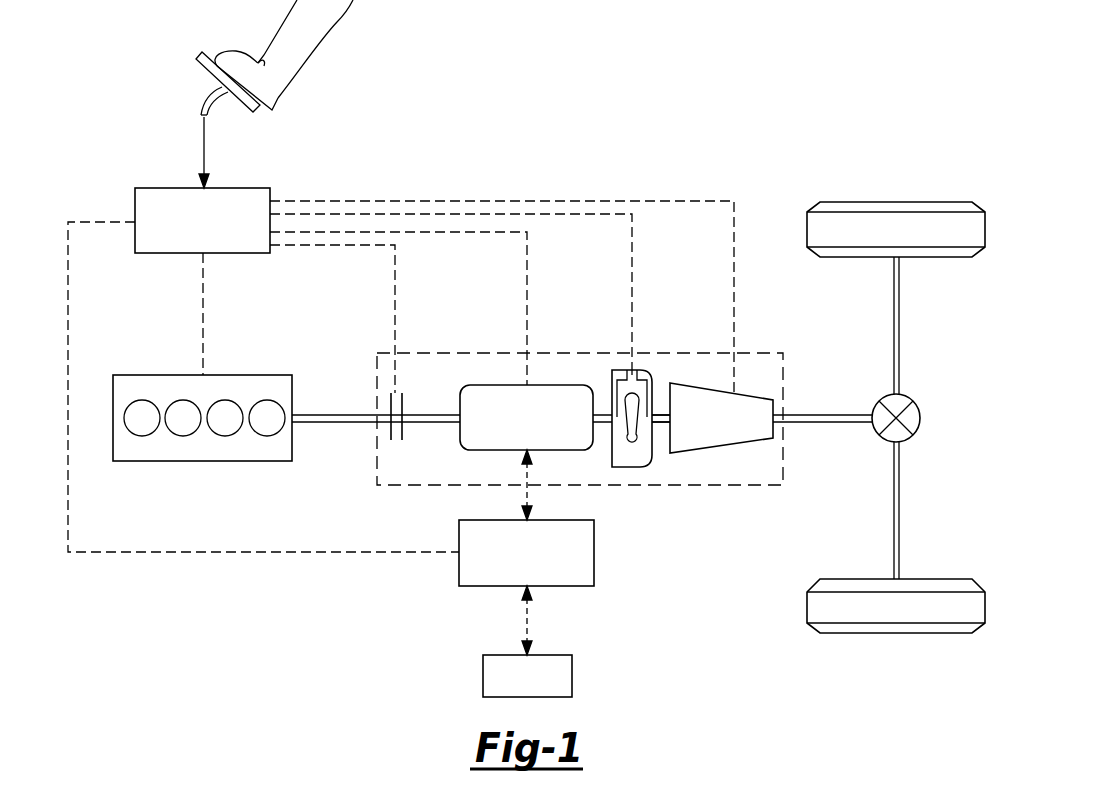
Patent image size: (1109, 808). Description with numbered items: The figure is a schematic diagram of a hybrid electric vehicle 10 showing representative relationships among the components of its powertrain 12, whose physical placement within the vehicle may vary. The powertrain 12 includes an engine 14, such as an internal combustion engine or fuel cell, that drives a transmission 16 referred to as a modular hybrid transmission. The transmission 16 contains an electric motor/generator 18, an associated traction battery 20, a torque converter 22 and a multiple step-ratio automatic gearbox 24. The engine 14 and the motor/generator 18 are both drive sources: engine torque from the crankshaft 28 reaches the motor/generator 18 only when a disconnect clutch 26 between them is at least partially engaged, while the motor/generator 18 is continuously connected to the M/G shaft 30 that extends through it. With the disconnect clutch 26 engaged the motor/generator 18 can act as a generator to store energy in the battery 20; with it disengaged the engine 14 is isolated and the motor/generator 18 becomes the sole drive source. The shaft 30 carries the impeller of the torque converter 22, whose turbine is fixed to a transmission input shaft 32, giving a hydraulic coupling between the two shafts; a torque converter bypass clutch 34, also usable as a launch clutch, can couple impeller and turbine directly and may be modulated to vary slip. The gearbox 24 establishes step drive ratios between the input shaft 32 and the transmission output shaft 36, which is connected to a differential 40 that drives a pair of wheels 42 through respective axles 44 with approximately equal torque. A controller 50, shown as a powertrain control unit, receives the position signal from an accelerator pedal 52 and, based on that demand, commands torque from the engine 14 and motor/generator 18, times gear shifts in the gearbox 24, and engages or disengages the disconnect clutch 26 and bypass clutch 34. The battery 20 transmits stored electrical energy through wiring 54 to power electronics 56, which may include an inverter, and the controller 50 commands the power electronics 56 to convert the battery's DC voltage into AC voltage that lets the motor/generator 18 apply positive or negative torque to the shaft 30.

The hybrid electric vehicle 10 is at (756, 127).
The powertrain 12 is at (322, 602).
The engine 14 is at (130, 375).
The transmission 16 is at (566, 350).
The electric motor/generator 18 is at (500, 385).
The traction battery 20 is at (483, 677).
The torque converter 22 is at (627, 467).
The gearbox 24 is at (718, 453).
The disconnect clutch 26 is at (392, 440).
The crankshaft 28 is at (358, 415).
The M/G shaft 30 is at (433, 415).
The transmission input shaft 32 is at (661, 414).
The torque converter bypass clutch 34 is at (632, 368).
The transmission output shaft 36 is at (839, 415).
The differential 40 is at (920, 418).
The wheels 42 is at (858, 202).
The axles 44 is at (899, 325).
The controller 50 is at (151, 188).
The accelerator pedal 52 is at (198, 62).
The wiring 54 is at (527, 621).
The power electronics 56 is at (594, 553).